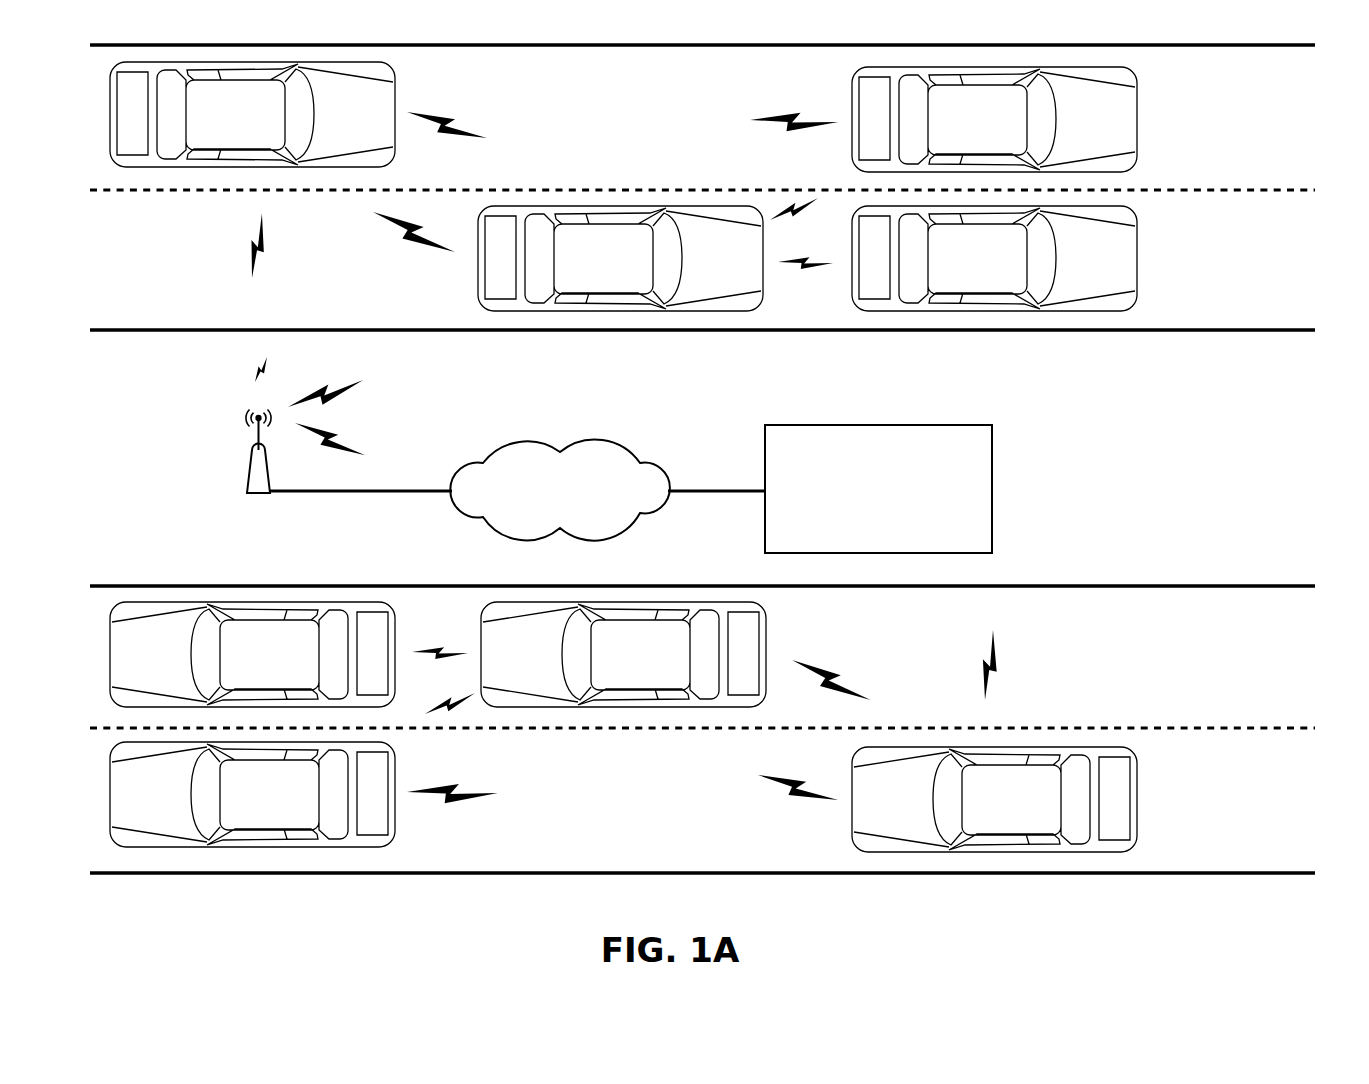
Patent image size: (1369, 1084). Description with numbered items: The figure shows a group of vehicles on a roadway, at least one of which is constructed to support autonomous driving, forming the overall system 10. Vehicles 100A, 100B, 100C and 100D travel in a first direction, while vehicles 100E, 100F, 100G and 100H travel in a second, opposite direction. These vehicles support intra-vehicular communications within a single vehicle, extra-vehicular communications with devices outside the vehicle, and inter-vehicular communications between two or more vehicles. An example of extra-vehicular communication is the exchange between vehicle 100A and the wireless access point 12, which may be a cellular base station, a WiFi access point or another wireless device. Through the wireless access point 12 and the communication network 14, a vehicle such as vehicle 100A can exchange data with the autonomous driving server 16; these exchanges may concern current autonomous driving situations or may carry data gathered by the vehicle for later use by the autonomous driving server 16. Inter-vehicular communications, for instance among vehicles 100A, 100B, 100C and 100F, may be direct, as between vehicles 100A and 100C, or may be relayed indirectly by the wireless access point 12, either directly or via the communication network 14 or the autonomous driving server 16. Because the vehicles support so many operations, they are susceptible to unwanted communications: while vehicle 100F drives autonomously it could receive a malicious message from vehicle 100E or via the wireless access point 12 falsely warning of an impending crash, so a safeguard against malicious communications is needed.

The autonomous driving system / roadway environment 10 is at (226, 902).
The wireless access point 12 is at (249, 490).
The communication network 14 is at (593, 443).
The autonomous driving server 16 is at (866, 530).
The vehicle 100A is at (208, 126).
The vehicle 100B is at (576, 270).
The vehicle 100C is at (950, 131).
The vehicle 100D is at (950, 270).
The vehicle 100E is at (989, 809).
The vehicle 100F is at (618, 666).
The vehicle 100G is at (247, 666).
The vehicle 100H is at (247, 806).